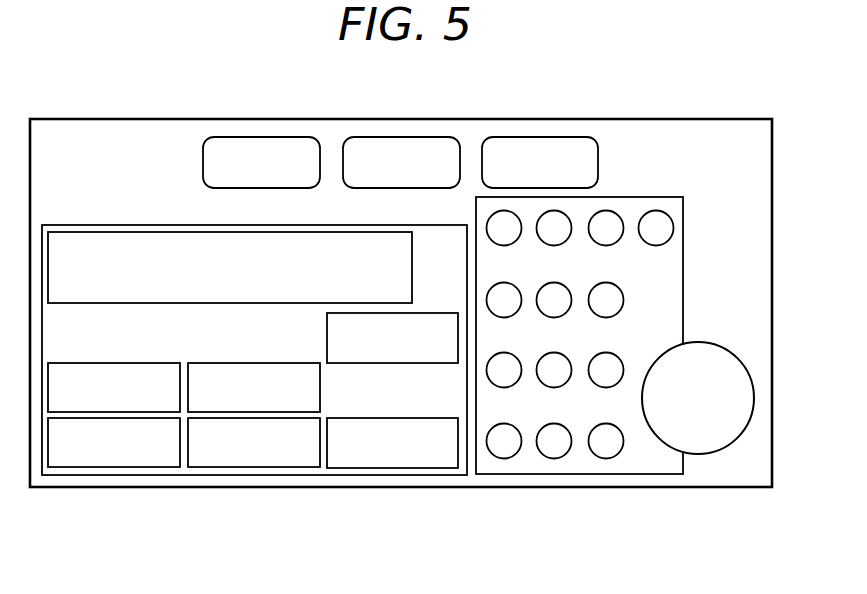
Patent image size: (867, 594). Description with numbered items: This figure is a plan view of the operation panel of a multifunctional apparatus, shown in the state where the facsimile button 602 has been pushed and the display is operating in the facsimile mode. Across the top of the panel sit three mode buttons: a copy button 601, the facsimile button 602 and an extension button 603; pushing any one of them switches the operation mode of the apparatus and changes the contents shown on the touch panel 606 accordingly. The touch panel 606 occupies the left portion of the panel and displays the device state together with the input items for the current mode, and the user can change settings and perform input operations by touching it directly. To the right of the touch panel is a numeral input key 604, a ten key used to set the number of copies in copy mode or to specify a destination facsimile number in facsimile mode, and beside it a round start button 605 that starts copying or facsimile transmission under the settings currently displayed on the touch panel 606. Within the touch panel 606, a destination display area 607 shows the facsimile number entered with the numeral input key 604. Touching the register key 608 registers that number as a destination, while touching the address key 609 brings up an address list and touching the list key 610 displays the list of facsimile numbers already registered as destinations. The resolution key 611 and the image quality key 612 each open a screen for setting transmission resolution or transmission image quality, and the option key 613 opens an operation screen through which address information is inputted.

The copy button 601 is at (281, 137).
The facsimile button 602 is at (420, 137).
The extension button 603 is at (556, 137).
The numeral input key 604 is at (686, 232).
The start button 605 is at (713, 342).
The touch panel 606 is at (97, 225).
The destination display area 607 is at (163, 232).
The register key 608 is at (372, 363).
The address key 609 is at (140, 363).
The list key 610 is at (275, 363).
The resolution key 611 is at (85, 468).
The image quality key 612 is at (232, 468).
The option key 613 is at (362, 468).